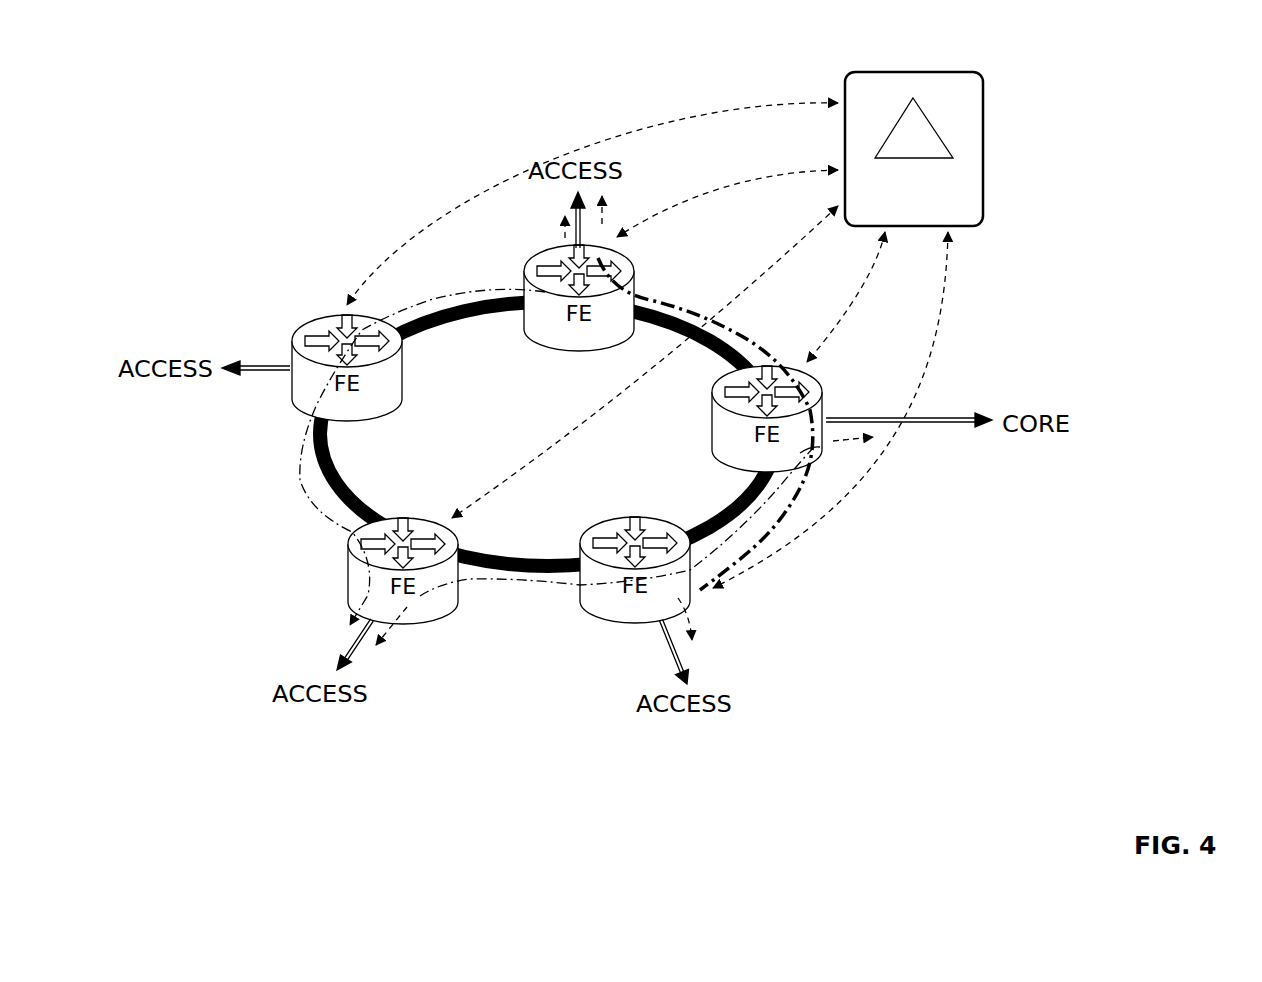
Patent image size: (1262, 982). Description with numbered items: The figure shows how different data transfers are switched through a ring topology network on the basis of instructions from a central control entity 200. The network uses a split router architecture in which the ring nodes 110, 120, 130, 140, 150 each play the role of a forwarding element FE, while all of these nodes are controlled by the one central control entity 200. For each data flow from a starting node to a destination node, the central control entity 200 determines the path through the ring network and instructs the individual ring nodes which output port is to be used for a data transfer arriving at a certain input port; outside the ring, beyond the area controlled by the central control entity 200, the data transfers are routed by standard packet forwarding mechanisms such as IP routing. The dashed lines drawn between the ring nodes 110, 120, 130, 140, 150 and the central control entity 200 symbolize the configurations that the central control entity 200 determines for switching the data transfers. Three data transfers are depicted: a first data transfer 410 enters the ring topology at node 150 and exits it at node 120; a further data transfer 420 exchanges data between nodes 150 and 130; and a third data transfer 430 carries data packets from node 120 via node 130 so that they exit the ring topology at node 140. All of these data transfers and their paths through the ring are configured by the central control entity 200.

The ring node 110 is at (405, 385).
The ring node 120 is at (580, 352).
The ring node 130 is at (712, 437).
The ring node 140 is at (632, 518).
The ring node 150 is at (442, 518).
The central control entity 200 is at (985, 210).
The first data transfer 410 is at (298, 451).
The further data transfer 420 is at (540, 592).
The third data transfer 430 is at (742, 338).